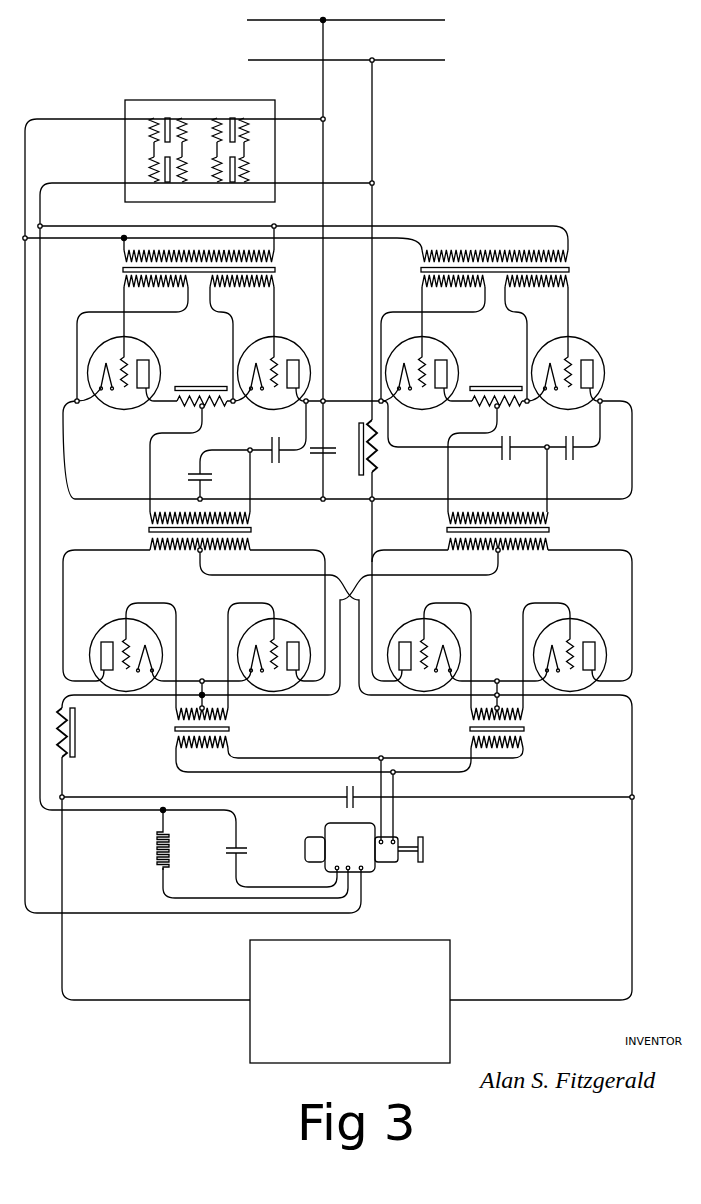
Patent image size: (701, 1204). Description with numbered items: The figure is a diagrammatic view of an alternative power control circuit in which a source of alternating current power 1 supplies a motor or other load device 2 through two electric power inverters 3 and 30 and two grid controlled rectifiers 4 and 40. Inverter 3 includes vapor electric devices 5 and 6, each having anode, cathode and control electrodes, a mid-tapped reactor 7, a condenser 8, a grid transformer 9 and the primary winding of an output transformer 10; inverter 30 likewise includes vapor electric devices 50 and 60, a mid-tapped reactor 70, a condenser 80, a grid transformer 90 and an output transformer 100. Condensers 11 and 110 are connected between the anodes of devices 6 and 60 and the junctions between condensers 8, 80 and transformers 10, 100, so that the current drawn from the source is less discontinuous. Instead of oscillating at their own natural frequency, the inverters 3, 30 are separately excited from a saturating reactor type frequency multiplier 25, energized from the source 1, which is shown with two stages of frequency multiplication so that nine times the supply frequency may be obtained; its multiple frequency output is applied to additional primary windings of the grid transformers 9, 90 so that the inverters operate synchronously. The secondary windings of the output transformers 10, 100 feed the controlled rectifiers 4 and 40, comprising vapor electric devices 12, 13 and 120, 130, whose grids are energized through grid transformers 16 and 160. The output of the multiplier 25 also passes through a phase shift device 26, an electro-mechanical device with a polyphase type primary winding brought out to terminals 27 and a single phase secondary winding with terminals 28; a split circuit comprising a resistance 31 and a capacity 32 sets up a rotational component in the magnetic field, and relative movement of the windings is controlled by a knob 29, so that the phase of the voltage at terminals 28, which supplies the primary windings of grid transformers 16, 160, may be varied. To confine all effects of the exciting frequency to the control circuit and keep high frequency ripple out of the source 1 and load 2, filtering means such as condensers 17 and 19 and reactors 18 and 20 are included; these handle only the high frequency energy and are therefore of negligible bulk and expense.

The source of alternating current power 1 is at (340, 350).
The load device 2 is at (350, 1001).
The inverter 3 is at (57, 353).
The grid controlled rectifier 4 is at (57, 633).
The vapor electric device 5 is at (133, 368).
The vapor electric device 6 is at (370, 386).
The mid-tapped reactor 7 is at (191, 441).
The condenser 8 is at (219, 474).
The grid transformer 9 is at (296, 281).
The output transformer 10 is at (390, 725).
The condenser 11 is at (278, 446).
The vapor electric device 12 is at (157, 621).
The vapor electric device 13 is at (282, 621).
The grid transformer 16 is at (349, 726).
The condenser 17 is at (478, 794).
The reactor 18 is at (202, 854).
The condenser 19 is at (319, 463).
The reactor 20 is at (379, 466).
The saturating reactor type frequency multiplier 25 is at (124, 93).
The phase shift device 26 is at (309, 831).
The terminals 27 is at (362, 872).
The terminals 28 is at (394, 840).
The knob 29 is at (424, 849).
The inverter 30 is at (634, 353).
The resistance 31 is at (245, 854).
The capacity 32 is at (269, 865).
The grid controlled rectifier 40 is at (661, 628).
The vapor electric device 50 is at (429, 368).
The vapor electric device 60 is at (347, 412).
The mid-tapped reactor 70 is at (487, 441).
The condenser 80 is at (500, 452).
The grid transformer 90 is at (506, 293).
The output transformer 100 is at (321, 610).
The condenser 110 is at (573, 456).
The vapor electric device 120 is at (468, 649).
The vapor electric device 130 is at (583, 621).
The grid transformer 160 is at (481, 714).